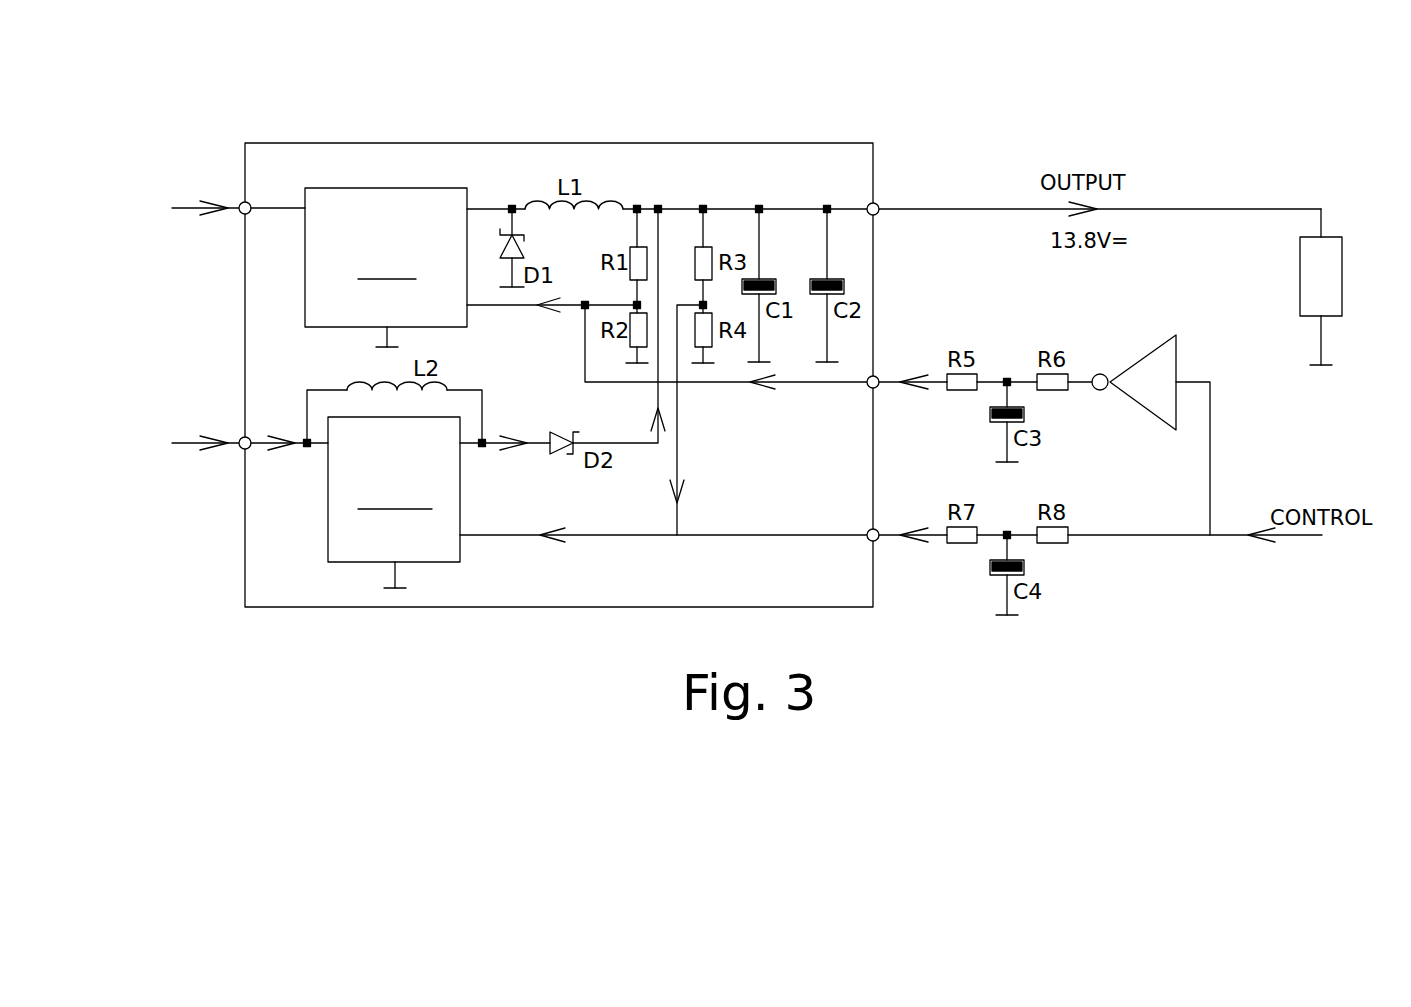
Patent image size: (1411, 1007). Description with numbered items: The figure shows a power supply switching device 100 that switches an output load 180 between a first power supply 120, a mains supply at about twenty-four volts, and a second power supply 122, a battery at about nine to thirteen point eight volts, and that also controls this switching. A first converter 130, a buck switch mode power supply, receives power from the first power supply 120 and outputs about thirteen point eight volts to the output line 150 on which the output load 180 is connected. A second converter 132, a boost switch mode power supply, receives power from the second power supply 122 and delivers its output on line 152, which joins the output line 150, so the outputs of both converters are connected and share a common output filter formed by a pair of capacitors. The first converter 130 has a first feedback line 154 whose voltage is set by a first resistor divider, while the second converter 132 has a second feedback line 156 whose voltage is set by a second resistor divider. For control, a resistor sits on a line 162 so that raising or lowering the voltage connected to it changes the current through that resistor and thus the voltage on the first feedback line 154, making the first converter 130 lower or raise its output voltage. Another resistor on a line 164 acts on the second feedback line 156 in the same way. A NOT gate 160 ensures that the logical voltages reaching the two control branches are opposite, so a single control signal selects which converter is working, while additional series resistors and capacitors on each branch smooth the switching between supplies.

The power supply switching device 100 is at (966, 97).
The first power supply 120 is at (186, 205).
The second power supply 122 is at (185, 440).
The first converter 130 is at (427, 212).
The second converter 132 is at (432, 425).
The output line 150 is at (700, 205).
The line 152 is at (615, 438).
The first feedback line 154 is at (565, 300).
The second feedback line 156 is at (608, 534).
The NOT gate 160 is at (1165, 363).
The line 162 is at (816, 386).
The line 164 is at (818, 533).
The output load 180 is at (1325, 268).